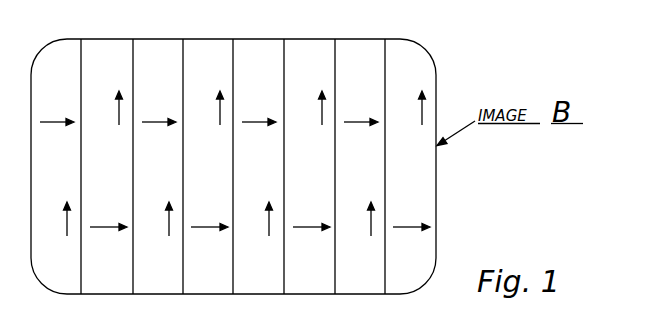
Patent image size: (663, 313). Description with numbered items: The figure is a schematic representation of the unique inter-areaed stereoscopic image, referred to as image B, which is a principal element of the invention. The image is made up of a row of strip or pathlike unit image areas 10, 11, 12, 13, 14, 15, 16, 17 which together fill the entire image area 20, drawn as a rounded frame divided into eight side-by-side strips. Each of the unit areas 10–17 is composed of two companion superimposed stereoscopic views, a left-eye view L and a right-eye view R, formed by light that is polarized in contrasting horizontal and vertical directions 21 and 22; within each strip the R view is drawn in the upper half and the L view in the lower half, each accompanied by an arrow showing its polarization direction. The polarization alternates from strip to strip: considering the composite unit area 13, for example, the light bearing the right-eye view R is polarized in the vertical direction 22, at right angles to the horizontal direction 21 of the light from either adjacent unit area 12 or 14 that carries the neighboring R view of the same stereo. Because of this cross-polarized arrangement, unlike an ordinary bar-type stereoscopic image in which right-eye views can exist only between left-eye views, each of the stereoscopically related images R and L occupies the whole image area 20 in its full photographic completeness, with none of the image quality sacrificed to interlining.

The unit image area 10 is at (60, 52).
The unit image area 11 is at (108, 52).
The unit image area 12 is at (155, 52).
The unit image area 13 is at (203, 52).
The unit image area 14 is at (251, 52).
The unit image area 15 is at (305, 52).
The unit image area 16 is at (357, 52).
The unit image area 17 is at (402, 52).
The image area 20 is at (437, 203).
The horizontal polarization direction 21 is at (53, 124).
The vertical polarization direction 22 is at (61, 216).